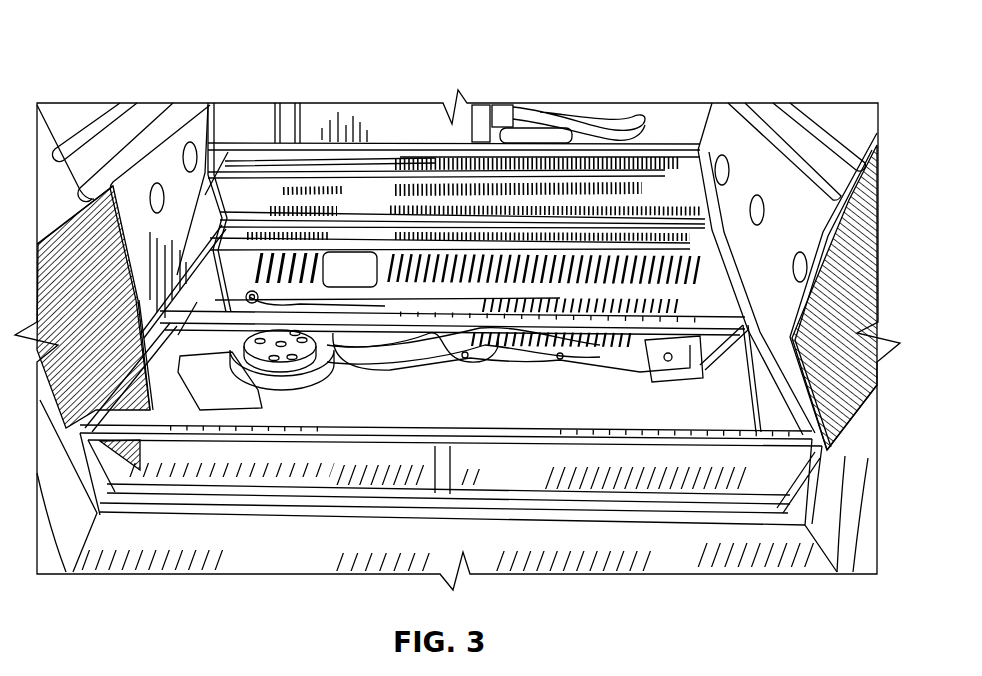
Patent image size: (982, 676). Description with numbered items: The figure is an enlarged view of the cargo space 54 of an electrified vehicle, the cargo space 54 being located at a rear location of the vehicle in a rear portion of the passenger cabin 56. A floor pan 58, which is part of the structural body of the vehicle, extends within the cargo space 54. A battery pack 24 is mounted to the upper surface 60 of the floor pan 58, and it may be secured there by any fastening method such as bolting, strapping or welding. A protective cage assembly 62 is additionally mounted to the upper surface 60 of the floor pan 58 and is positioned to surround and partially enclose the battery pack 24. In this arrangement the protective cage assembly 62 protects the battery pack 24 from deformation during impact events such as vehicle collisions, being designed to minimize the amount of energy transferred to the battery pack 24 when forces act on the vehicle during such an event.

The battery pack 24 is at (456, 268).
The cargo space 54 is at (598, 516).
The passenger cabin 56 is at (380, 120).
The floor pan 58 is at (703, 405).
The upper surface 60 is at (522, 411).
The protective cage assembly 62 is at (720, 252).